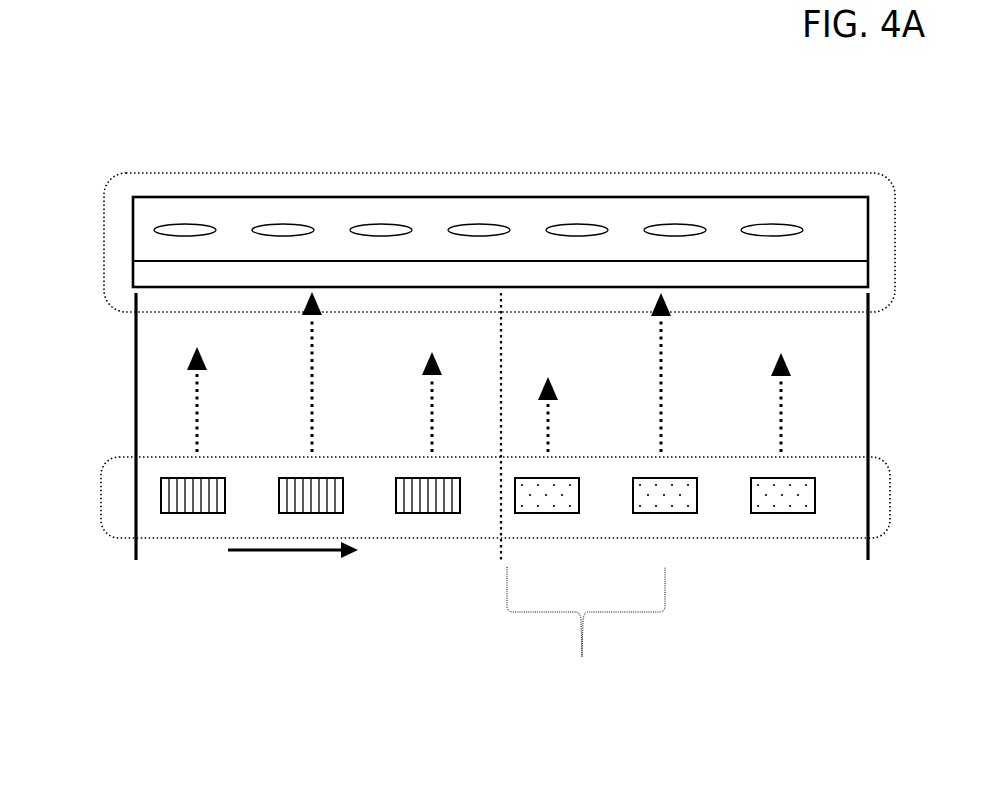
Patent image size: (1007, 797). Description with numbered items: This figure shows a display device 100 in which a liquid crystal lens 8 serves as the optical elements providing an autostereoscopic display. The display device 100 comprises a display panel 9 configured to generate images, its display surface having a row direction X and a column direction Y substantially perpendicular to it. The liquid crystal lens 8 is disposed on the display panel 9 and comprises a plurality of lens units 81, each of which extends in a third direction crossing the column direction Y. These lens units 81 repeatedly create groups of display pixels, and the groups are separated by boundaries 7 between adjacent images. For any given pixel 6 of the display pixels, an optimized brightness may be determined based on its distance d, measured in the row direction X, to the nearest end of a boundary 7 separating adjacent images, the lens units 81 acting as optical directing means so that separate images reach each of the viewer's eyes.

The display device 100 is at (115, 392).
The liquid crystal lens 8 is at (464, 175).
The lens unit 81 is at (506, 197).
The boundary 7 is at (136, 570).
The display panel 9 is at (110, 542).
The pixel 6 is at (668, 500).